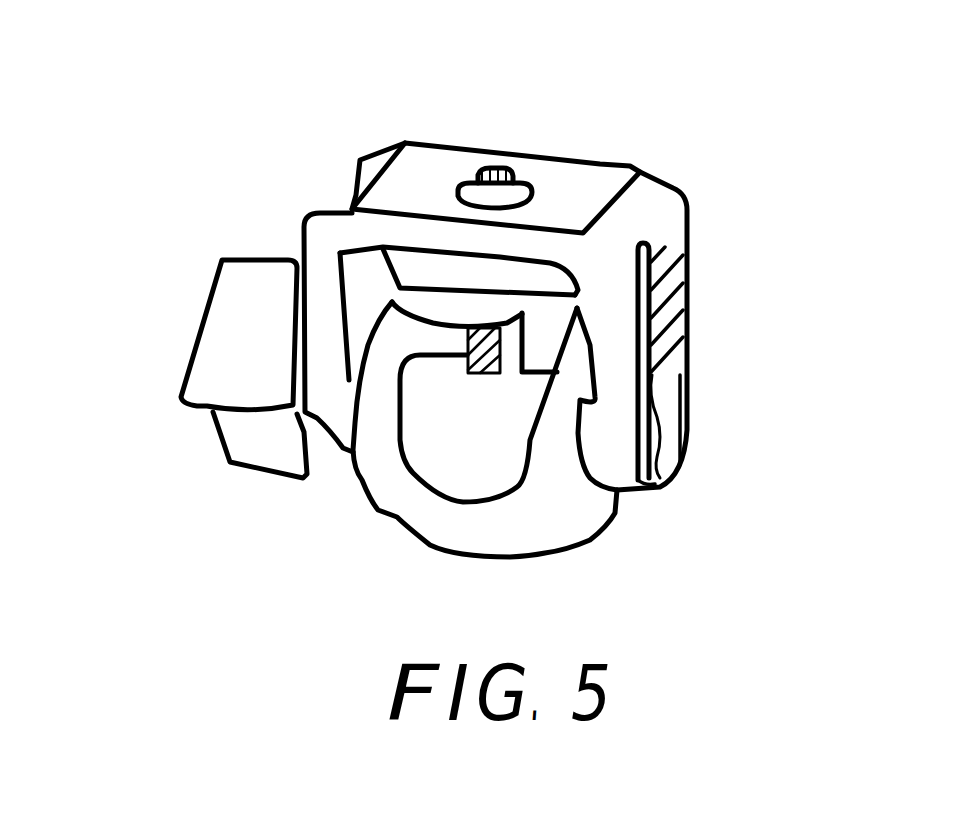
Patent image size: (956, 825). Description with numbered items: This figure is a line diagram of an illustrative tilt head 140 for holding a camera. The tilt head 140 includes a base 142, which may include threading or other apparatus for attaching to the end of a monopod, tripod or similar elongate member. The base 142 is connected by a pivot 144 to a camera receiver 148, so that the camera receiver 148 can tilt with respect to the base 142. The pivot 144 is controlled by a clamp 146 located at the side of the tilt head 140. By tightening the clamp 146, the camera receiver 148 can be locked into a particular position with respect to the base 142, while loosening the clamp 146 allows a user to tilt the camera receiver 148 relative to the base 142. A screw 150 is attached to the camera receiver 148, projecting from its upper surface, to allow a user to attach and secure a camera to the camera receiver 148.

The tilt head 140 is at (360, 100).
The base 142 is at (570, 523).
The pivot 144 is at (685, 415).
The clamp 146 is at (208, 427).
The camera receiver 148 is at (580, 188).
The screw 150 is at (530, 305).